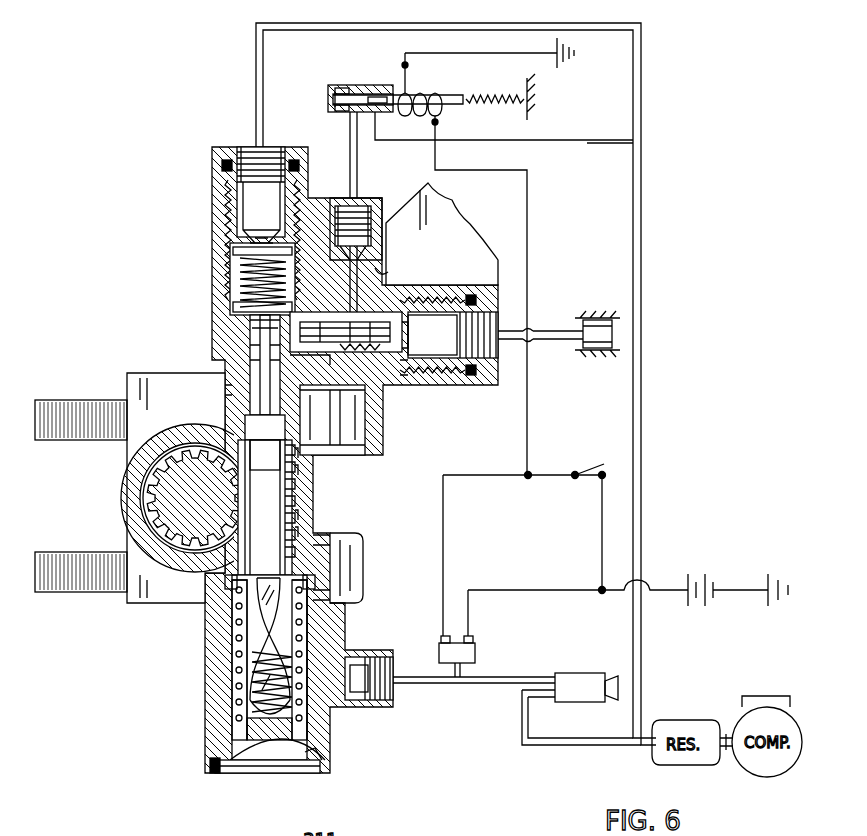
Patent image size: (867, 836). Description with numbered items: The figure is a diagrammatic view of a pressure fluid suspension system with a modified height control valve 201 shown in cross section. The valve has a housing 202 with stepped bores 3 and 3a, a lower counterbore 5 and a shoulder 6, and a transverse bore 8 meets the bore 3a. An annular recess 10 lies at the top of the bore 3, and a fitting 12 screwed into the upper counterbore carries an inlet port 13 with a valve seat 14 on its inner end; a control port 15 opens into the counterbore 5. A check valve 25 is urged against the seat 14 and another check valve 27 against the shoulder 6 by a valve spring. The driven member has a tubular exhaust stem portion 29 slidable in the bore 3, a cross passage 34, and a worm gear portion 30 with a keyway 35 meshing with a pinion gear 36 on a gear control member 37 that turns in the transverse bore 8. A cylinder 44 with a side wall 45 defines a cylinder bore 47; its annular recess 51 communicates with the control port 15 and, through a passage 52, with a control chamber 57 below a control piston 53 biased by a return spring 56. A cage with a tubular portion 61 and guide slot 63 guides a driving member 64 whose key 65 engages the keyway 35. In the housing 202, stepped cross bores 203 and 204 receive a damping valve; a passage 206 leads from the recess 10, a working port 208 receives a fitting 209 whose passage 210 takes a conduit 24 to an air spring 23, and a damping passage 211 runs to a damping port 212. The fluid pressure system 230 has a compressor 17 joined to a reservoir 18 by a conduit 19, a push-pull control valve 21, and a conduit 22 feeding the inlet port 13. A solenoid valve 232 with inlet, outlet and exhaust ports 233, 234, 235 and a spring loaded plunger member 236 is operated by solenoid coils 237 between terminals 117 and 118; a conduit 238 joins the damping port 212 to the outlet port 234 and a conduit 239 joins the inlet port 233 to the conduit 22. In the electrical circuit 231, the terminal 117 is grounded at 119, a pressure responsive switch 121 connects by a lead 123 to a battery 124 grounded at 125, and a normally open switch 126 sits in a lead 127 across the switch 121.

The stepped bore 3 is at (250, 352).
The stepped bore 3a is at (296, 494).
The lower counterbore 5 is at (226, 773).
The shoulder 6 is at (250, 322).
The transverse bore 8 is at (140, 482).
The annular recess 10 is at (250, 347).
The fitting 12 is at (224, 152).
The inlet port 13 is at (244, 160).
The valve seat 14 is at (250, 242).
The control port 15 is at (393, 702).
The compressor 17 is at (762, 706).
The reservoir 18 is at (686, 722).
The conduit 19 is at (728, 752).
The control valve 21 is at (517, 709).
The conduit 22 is at (643, 418).
The air spring 23 is at (598, 318).
The conduit 24 is at (552, 341).
The check valve 25 is at (230, 262).
The check valve 27 is at (232, 306).
The exhaust stem portion 29 is at (234, 386).
The worm gear portion 30 is at (290, 470).
The cross passage 34 is at (265, 427).
The keyway 35 is at (290, 518).
The pinion gear 36 is at (205, 514).
The gear control member 37 is at (150, 517).
The cylinder 44 is at (244, 768).
The side wall 45 is at (228, 586).
The cylinder bore 47 is at (252, 678).
The annular recess 51 is at (232, 725).
The passage 52 is at (308, 735).
The control piston 53 is at (272, 762).
The return spring 56 is at (307, 634).
The control chamber 57 is at (300, 762).
The tubular portion 61 is at (232, 634).
The guide slot 63 is at (267, 646).
The driving member 64 is at (272, 566).
The key 65 is at (263, 476).
The terminal 117 is at (405, 65).
The terminal 118 is at (438, 122).
The ground 119 is at (570, 62).
The switch 121 is at (472, 654).
The lead 123 is at (537, 590).
The battery 124 is at (698, 566).
The ground 125 is at (778, 572).
The normally open switch 126 is at (585, 471).
The lead 127 is at (602, 545).
The height control valve 201 is at (197, 161).
The housing 202 is at (212, 192).
The cross bore 203 is at (315, 368).
The cross bore 204 is at (360, 390).
The passage 206 is at (346, 317).
The working port 208 is at (440, 385).
The fitting 209 is at (446, 298).
The passage 210 is at (440, 344).
The damping passage 211 is at (380, 272).
The damping port 212 is at (388, 190).
The fluid pressure system 230 is at (706, 380).
The electrical circuit 231 is at (502, 491).
The solenoid valve 232 is at (328, 95).
The inlet port 233 is at (378, 106).
The outlet port 234 is at (338, 112).
The exhaust port 235 is at (350, 86).
The plunger member 236 is at (462, 92).
The solenoid coils 237 is at (418, 90).
The conduit 238 is at (358, 160).
The conduit 239 is at (586, 144).